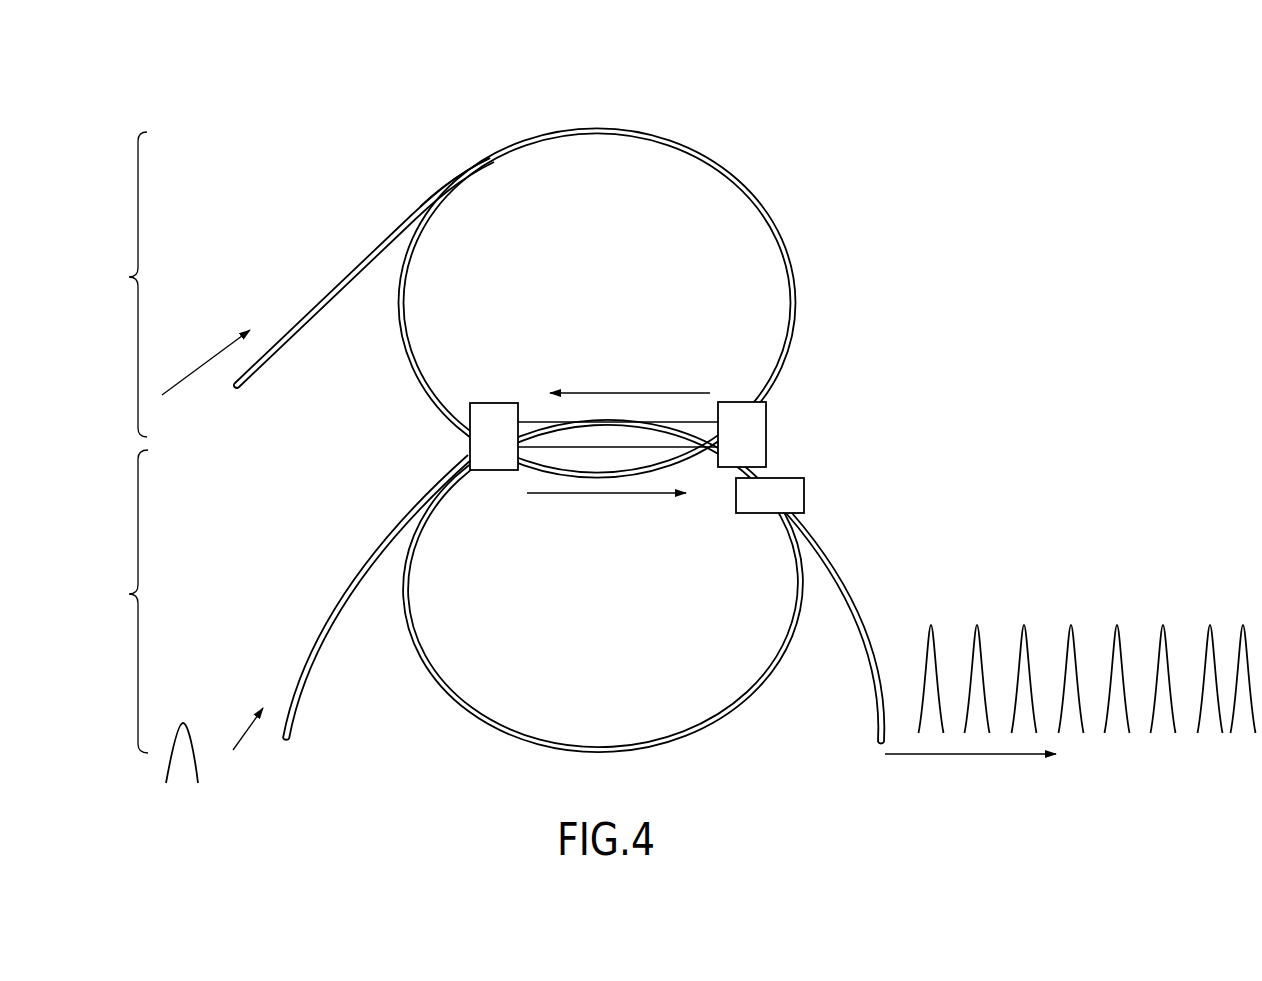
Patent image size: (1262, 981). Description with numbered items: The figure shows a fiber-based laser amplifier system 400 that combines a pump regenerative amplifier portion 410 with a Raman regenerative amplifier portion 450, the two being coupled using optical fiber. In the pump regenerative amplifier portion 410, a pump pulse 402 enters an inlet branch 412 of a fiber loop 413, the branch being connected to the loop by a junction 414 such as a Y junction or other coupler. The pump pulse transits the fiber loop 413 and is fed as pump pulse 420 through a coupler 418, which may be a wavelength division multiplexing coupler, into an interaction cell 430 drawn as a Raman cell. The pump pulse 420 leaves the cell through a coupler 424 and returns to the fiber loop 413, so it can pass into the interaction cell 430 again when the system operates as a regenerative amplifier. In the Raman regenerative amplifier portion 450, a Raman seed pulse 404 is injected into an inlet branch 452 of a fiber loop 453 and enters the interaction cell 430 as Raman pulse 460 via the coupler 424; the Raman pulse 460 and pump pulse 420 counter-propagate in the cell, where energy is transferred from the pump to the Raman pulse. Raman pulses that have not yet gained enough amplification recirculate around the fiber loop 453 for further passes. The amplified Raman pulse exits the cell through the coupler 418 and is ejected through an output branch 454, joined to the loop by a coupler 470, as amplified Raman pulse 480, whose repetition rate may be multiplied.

The fiber-based laser amplifier system 400 is at (187, 125).
The pump pulse 402 is at (183, 380).
The Raman seed pulse 404 is at (247, 738).
The pump regenerative amplifier portion 410 is at (118, 284).
The inlet branch 412 is at (310, 313).
The fiber loop 413 is at (713, 170).
The junction 414 is at (440, 185).
The coupler 418 is at (768, 425).
The pump pulse 420 is at (657, 388).
The coupler 424 is at (485, 403).
The interaction cell 430 is at (552, 447).
The Raman regenerative amplifier portion 450 is at (119, 601).
The inlet branch 452 is at (310, 668).
The fiber loop 453 is at (738, 688).
The output branch 454 is at (857, 627).
The Raman pulse 460 is at (655, 494).
The coupler 470 is at (808, 510).
The amplified Raman pulse 480 is at (957, 754).